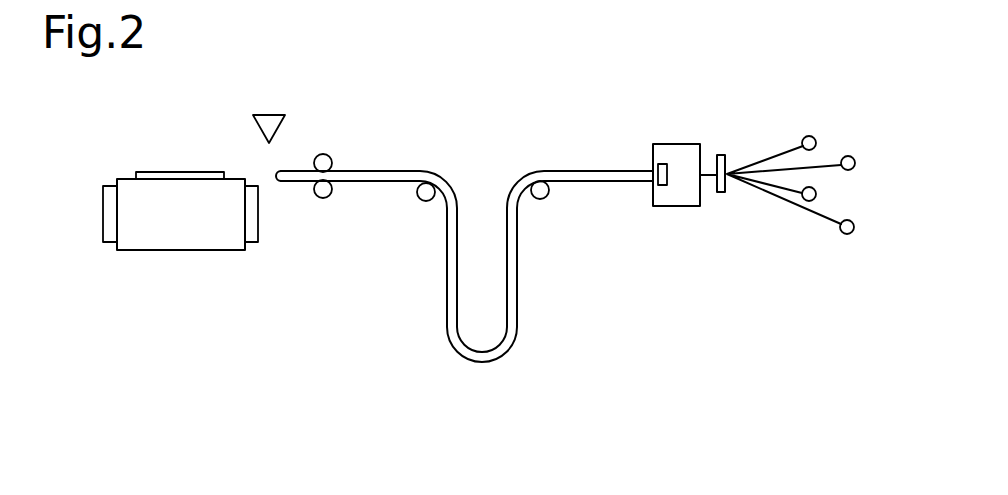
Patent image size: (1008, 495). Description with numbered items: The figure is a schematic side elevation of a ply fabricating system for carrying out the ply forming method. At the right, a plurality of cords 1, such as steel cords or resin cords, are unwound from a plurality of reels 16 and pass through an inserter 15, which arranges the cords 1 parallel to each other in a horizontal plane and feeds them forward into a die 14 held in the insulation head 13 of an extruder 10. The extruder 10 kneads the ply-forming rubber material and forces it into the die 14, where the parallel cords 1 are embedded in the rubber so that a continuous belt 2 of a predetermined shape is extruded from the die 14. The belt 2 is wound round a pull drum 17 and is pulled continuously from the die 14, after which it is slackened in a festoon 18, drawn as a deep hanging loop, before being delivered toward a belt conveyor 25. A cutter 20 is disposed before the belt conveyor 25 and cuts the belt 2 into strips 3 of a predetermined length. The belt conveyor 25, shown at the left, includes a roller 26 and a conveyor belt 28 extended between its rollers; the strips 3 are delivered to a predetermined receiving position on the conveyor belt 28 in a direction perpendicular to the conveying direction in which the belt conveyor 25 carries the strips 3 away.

The cord 1 is at (808, 172).
The belt 2 is at (580, 172).
The strip 3 is at (175, 172).
The extruder 10 is at (694, 160).
The insulation head 13 is at (685, 206).
The die 14 is at (663, 187).
The inserter 15 is at (722, 192).
The reel 16 is at (817, 140).
The pull drum 17 is at (543, 200).
The festoon 18 is at (420, 202).
The cutter 20 is at (283, 126).
The belt conveyor 25 is at (147, 224).
The roller 26 is at (103, 224).
The conveyor belt 28 is at (125, 178).